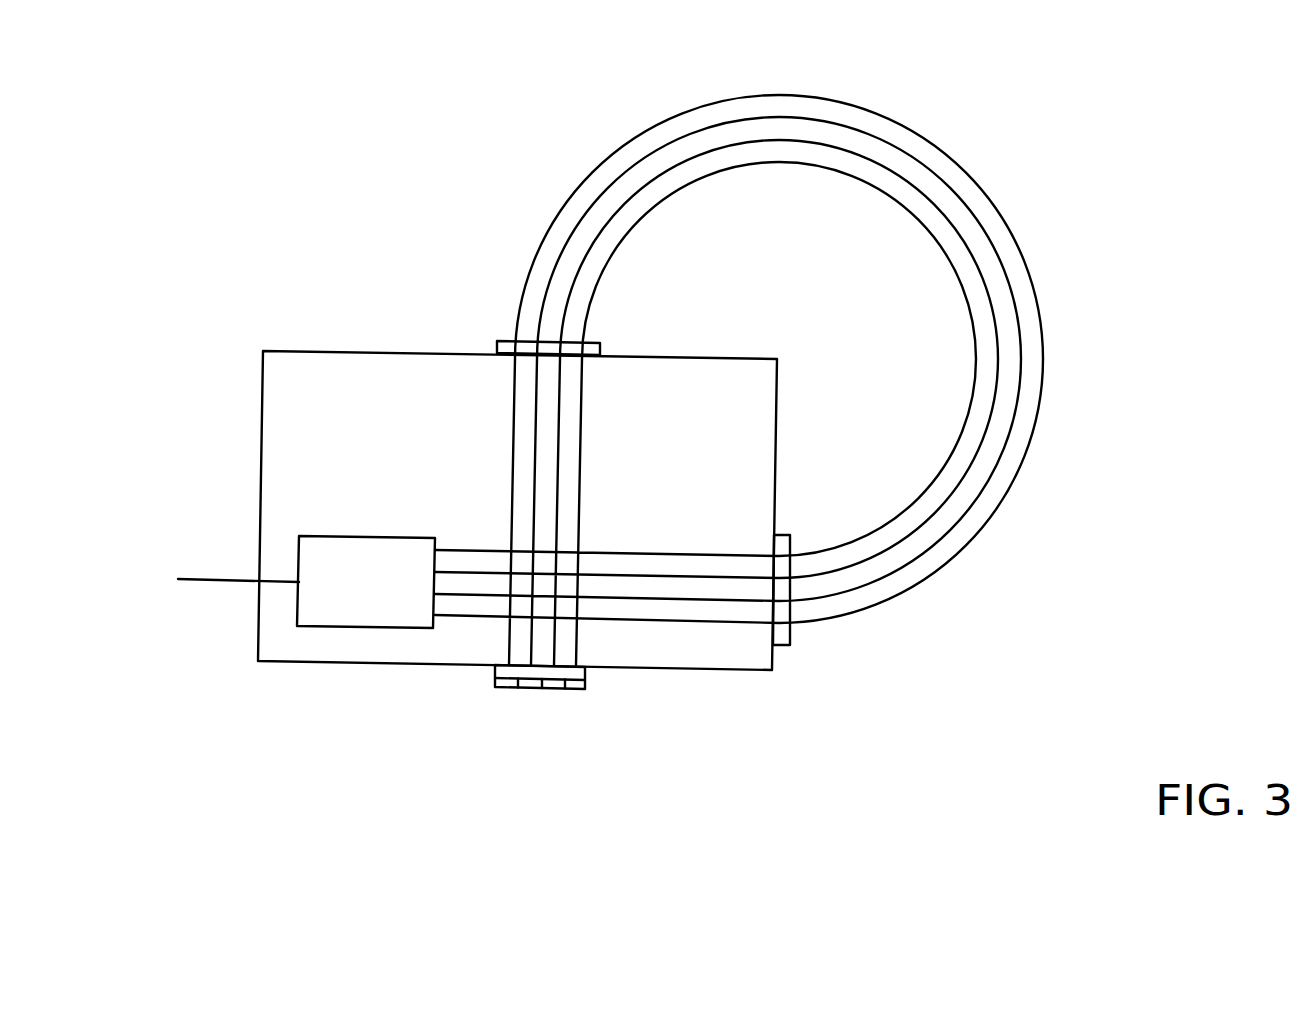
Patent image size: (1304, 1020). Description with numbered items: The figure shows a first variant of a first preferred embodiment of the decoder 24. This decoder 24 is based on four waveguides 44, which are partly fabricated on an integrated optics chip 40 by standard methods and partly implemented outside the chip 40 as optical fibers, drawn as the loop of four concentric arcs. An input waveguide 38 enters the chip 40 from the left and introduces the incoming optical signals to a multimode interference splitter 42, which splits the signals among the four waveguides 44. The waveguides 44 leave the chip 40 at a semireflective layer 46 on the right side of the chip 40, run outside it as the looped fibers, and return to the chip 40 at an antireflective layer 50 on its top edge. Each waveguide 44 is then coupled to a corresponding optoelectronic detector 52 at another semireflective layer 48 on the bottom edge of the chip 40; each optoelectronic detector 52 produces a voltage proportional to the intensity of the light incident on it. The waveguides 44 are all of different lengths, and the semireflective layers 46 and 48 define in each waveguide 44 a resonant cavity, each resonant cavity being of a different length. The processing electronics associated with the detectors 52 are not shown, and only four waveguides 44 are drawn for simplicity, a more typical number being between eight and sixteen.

The decoder 24 is at (849, 351).
The input waveguide 38 is at (201, 583).
The integrated optics chip 40 is at (338, 414).
The multimode interference splitter 42 is at (372, 600).
The waveguides 44 is at (927, 167).
The semireflective layer 46 is at (788, 645).
The semireflective layer 48 is at (585, 673).
The antireflective layer 50 is at (526, 347).
The optoelectronic detector 52 is at (507, 690).